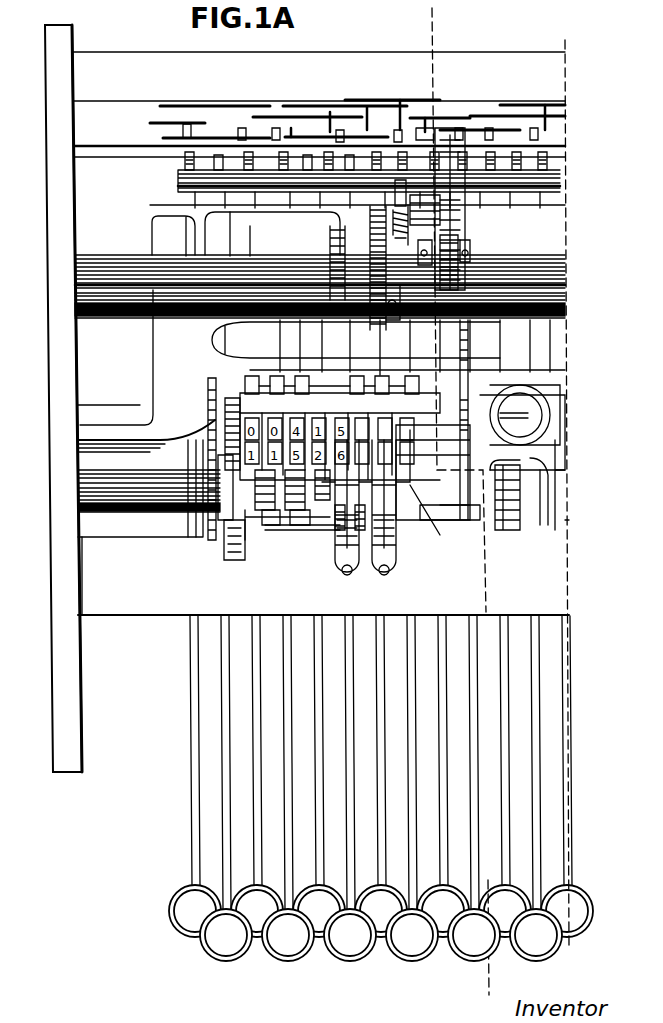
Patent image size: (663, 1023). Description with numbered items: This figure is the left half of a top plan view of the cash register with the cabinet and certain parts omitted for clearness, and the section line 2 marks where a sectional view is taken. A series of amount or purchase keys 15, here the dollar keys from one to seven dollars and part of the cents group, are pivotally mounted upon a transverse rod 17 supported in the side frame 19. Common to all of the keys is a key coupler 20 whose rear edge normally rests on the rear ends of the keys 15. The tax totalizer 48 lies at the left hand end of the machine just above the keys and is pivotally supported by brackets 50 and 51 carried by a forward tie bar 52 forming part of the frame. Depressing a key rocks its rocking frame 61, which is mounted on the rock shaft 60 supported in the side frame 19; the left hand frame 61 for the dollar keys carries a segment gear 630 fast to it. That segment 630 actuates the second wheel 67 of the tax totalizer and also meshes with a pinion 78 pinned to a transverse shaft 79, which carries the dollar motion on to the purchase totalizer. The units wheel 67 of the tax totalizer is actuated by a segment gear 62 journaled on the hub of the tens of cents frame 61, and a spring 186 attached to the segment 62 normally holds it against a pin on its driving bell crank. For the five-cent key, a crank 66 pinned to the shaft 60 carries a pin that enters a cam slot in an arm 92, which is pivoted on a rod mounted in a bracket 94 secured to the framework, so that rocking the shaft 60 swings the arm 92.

The section line 2- 2 is at (432, 17).
The amount or purchase keys 15 is at (192, 842).
The transverse rod 17 is at (122, 500).
The side frame 19 is at (56, 734).
The key coupler 20 is at (160, 344).
The tax totalizer 48 is at (432, 520).
The bracket 50 is at (216, 523).
The bracket 51 is at (535, 505).
The forward tie bar 52 is at (146, 610).
The rock shaft 60 is at (115, 262).
The rocking frame 61 is at (252, 222).
The segment gear 62 is at (410, 385).
The crank 66 is at (455, 240).
The wheel 67 is at (352, 448).
The pinion 78 is at (332, 274).
The transverse shaft 79 is at (126, 306).
The arm 92 is at (425, 128).
The bracket 94 is at (462, 128).
The spring 186 is at (395, 225).
The segment gear 630 is at (370, 237).